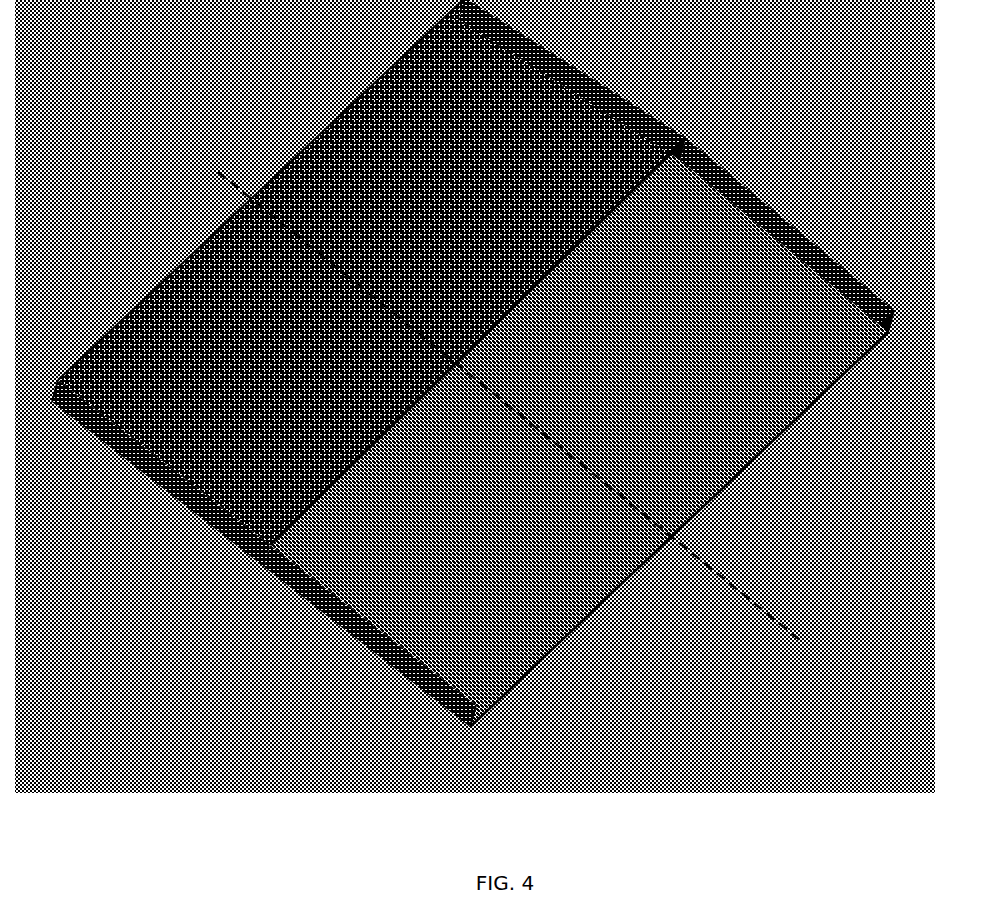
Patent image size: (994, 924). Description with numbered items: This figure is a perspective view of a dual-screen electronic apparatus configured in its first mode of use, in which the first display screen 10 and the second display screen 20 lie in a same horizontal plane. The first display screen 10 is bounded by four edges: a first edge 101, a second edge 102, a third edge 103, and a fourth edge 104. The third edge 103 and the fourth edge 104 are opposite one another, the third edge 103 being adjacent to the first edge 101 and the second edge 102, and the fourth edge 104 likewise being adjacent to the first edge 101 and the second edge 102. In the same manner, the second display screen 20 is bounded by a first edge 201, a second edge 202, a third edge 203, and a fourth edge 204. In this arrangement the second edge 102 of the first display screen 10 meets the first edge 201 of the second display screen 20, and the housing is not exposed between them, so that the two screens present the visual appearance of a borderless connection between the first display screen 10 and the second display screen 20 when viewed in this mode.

The first display screen 10 is at (369, 283).
The first edge 101 is at (302, 142).
The second edge 102 is at (512, 312).
The third edge 103 is at (598, 118).
The fourth edge 104 is at (193, 455).
The second display screen 20 is at (579, 432).
The first edge 201 is at (590, 253).
The second edge 202 is at (612, 565).
The third edge 203 is at (752, 232).
The fourth edge 204 is at (370, 596).